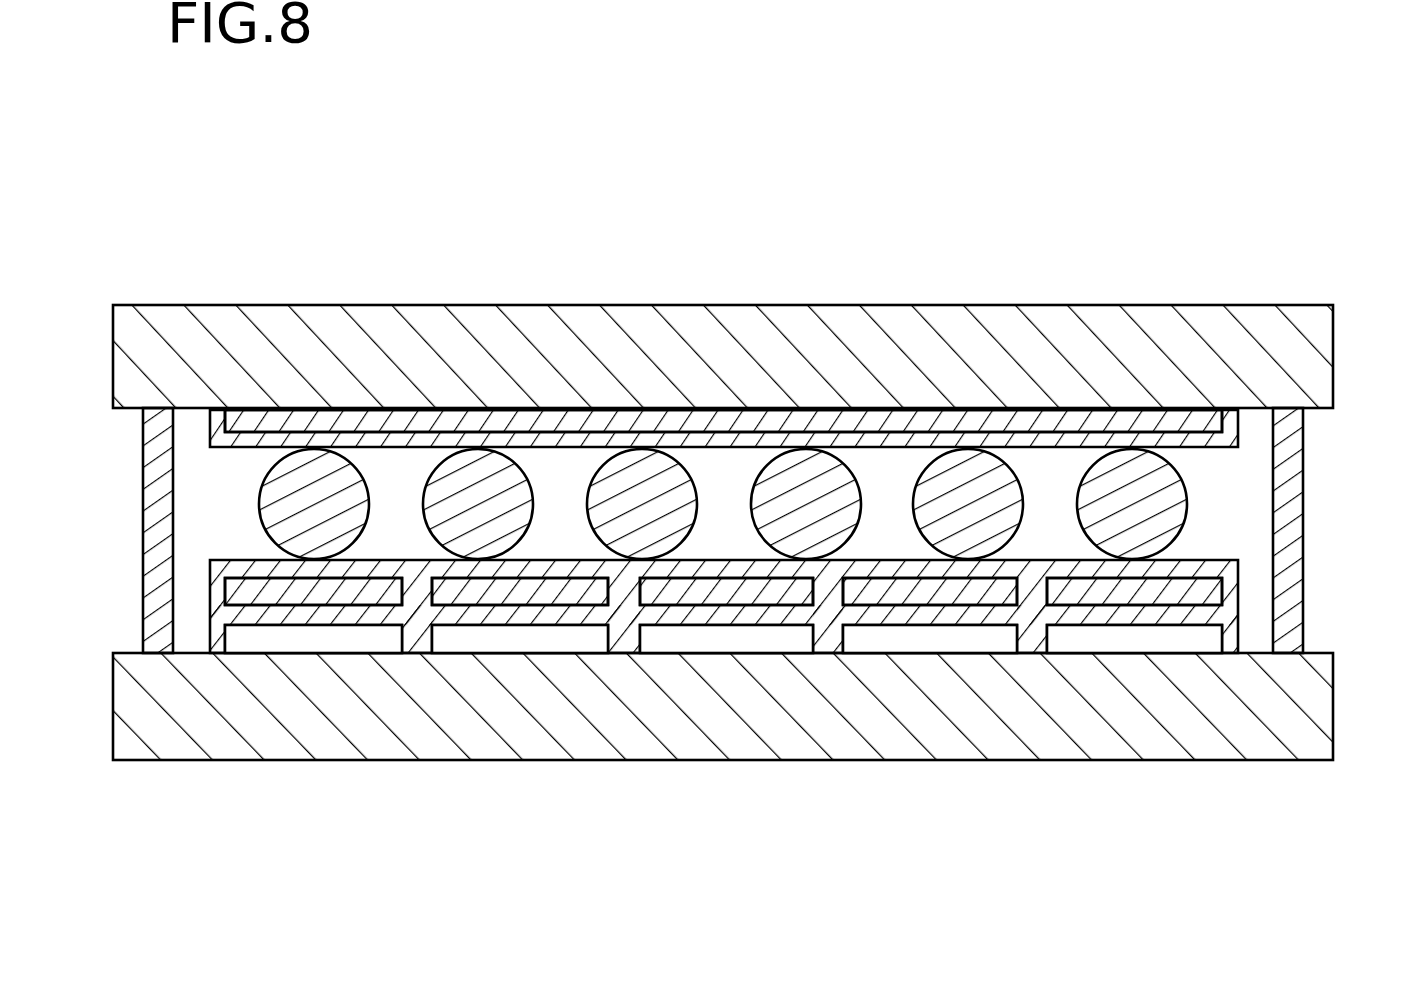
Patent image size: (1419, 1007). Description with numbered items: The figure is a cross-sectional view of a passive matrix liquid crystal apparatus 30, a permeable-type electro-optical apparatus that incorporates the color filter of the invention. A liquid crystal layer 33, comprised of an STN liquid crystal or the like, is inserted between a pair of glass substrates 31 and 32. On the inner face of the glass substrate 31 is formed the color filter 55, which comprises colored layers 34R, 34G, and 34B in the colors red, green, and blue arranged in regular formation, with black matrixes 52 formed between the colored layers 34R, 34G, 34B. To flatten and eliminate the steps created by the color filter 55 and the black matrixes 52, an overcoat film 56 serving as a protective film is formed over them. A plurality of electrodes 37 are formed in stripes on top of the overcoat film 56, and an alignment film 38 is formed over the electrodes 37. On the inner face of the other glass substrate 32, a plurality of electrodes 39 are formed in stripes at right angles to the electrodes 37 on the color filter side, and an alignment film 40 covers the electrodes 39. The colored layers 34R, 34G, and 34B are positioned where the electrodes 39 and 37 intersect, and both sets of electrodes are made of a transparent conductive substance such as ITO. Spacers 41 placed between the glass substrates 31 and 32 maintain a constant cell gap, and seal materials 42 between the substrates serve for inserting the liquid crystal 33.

The liquid crystal apparatus 30 is at (555, 274).
The glass substrate 31 is at (318, 730).
The glass substrate 32 is at (291, 340).
The liquid crystal layer 33 is at (1248, 432).
The colored layer 34R is at (262, 635).
The colored layer 34G is at (560, 635).
The colored layer 34B is at (680, 635).
The electrodes 37 is at (888, 590).
The alignment film 38 is at (265, 570).
The electrodes 39 is at (360, 428).
The alignment film 40 is at (708, 440).
The spacers 41 is at (297, 512).
The seal materials 42 is at (158, 500).
The black matrixes 52 is at (415, 637).
The color filter 55 is at (1190, 640).
The overcoat film 56 is at (1243, 608).